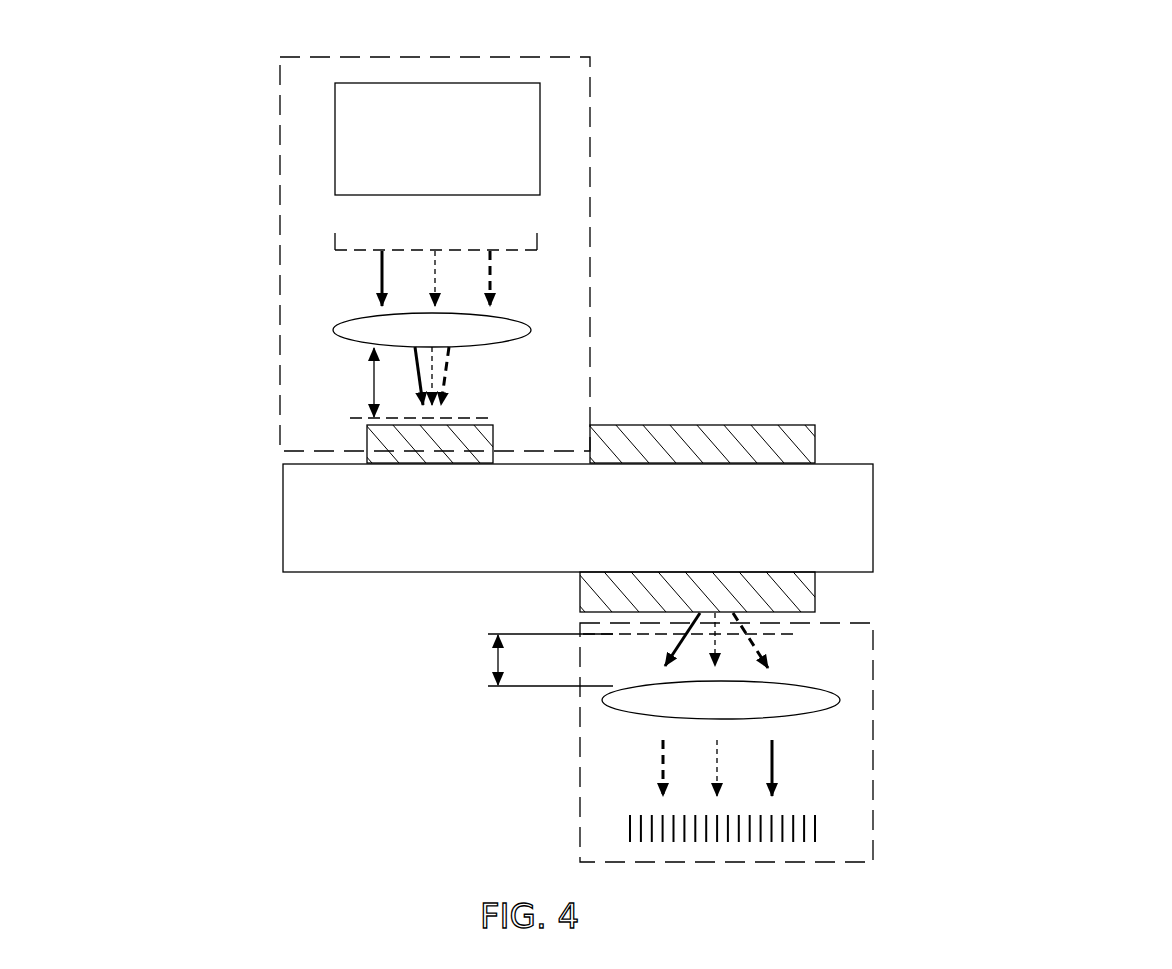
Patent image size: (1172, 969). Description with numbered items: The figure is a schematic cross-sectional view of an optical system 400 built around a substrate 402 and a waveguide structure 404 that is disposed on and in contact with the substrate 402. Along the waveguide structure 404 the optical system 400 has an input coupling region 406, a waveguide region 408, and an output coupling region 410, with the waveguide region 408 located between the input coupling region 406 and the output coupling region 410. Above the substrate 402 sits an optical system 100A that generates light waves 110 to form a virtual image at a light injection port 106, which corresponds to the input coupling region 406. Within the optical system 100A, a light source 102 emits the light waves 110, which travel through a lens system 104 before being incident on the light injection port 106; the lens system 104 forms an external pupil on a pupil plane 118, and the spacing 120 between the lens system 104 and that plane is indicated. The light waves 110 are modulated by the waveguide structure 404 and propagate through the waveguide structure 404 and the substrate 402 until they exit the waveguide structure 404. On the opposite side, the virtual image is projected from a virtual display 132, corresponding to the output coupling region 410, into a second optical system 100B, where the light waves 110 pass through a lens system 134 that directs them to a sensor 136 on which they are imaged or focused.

The optical system 400 is at (720, 58).
The optical system 100A is at (230, 107).
The second optical apparatus (receiver) 100B is at (1068, 683).
The light source 102 is at (456, 147).
The lens system 104 is at (530, 330).
The light injection port 106 is at (367, 430).
The light waves 110 is at (462, 404).
The pupil plane 118 is at (350, 418).
The focal distance 120 is at (374, 385).
The virtual display 132 is at (580, 583).
The lens system 134 is at (840, 700).
The sensor 136 is at (818, 826).
The substrate 402 is at (873, 515).
The waveguide structure 404 is at (815, 457).
The input coupling region 406 is at (455, 457).
The waveguide region 408 is at (815, 430).
The output coupling region 410 is at (815, 586).